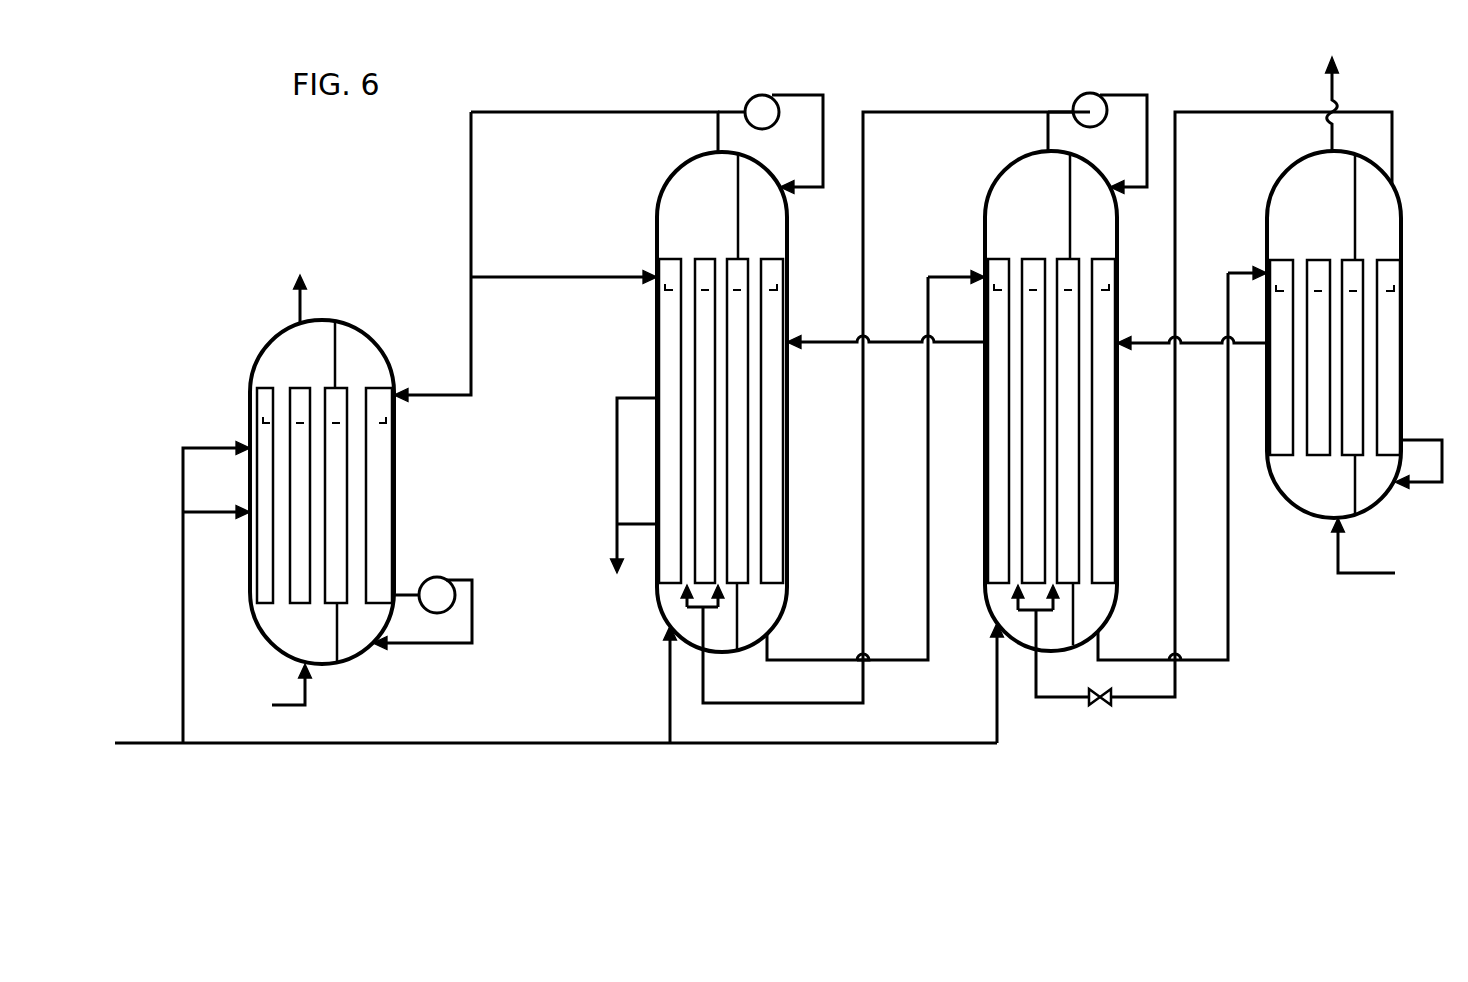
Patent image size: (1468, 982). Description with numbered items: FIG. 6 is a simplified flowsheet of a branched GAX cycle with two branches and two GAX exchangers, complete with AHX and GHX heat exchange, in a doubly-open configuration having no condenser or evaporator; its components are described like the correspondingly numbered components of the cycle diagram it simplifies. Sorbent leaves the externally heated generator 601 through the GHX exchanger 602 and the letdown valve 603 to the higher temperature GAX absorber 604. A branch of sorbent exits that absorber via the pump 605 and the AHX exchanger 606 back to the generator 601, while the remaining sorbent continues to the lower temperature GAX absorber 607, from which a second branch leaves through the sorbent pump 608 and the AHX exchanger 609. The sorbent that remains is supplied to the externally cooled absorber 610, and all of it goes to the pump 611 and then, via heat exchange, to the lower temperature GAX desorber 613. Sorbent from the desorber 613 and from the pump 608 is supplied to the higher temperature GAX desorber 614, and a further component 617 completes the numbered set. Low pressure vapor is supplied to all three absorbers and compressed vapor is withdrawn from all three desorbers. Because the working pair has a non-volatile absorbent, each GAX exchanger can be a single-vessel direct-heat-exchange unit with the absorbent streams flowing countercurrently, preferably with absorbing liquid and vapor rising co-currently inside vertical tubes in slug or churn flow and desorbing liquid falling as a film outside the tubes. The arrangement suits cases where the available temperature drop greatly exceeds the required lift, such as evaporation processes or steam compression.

The externally heated generator 601 is at (1312, 520).
The GHX exchanger 602 is at (1395, 574).
The letdown valve 603 is at (1103, 704).
The higher temperature GAX absorber 604 is at (1043, 546).
The pump 605 is at (1068, 100).
The AHX exchanger 606 is at (1098, 457).
The lower temperature GAX absorber 607 is at (710, 348).
The sorbent pump 608 is at (751, 100).
The AHX exchanger 609 is at (780, 456).
The externally-cooled absorber 610 is at (250, 396).
The pump 611 is at (423, 579).
The lower temperature GAX desorber 613 is at (657, 575).
The higher temperature GAX desorber 614 is at (980, 470).
The component 617 is at (367, 527).